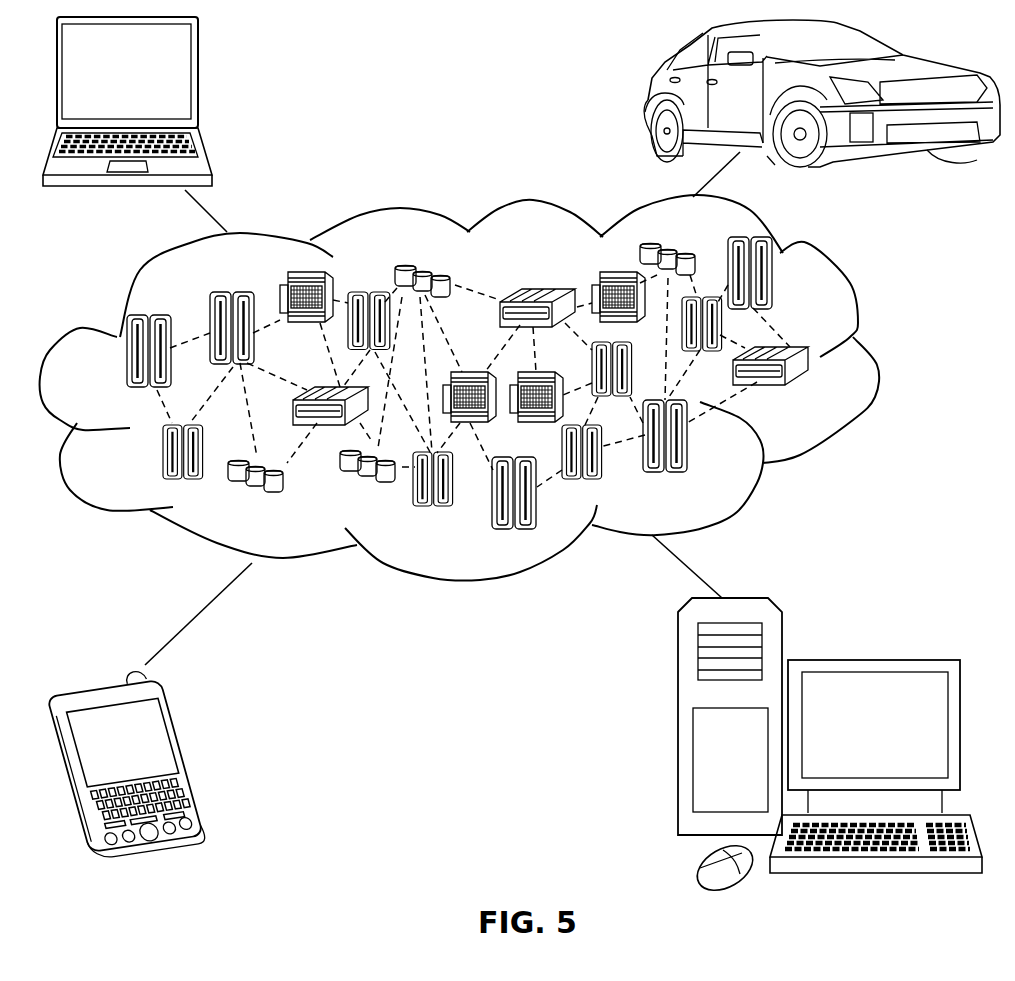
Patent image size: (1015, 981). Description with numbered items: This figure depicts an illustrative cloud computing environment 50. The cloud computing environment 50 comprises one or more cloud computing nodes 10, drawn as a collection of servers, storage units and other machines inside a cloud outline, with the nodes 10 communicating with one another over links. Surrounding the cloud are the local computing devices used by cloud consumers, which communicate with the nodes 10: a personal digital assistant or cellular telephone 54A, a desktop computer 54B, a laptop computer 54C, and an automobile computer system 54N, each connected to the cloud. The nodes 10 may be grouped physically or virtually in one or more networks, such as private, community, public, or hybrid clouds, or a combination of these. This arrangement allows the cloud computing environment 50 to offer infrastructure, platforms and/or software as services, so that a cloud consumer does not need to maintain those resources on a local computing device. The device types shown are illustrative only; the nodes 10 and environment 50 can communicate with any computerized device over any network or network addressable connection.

The cloud computing node 10 is at (830, 397).
The cloud computing environment 50 is at (877, 364).
The personal digital assistant or cellular telephone 54A is at (189, 757).
The desktop computer 54B is at (872, 658).
The laptop computer 54C is at (202, 81).
The automobile computer system 54N is at (648, 100).